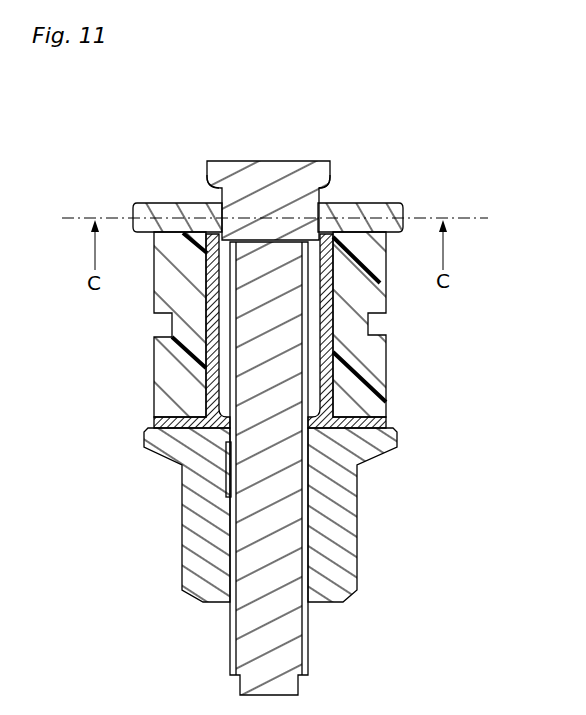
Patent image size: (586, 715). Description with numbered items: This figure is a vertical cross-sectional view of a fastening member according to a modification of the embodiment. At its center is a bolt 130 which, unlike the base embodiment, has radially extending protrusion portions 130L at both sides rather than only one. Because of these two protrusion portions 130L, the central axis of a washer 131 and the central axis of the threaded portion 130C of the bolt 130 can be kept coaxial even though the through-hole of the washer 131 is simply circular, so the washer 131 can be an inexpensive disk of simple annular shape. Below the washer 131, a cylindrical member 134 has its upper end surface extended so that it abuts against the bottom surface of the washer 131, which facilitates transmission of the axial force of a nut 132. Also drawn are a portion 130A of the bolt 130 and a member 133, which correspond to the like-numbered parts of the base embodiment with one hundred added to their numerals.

The bolt 130 is at (283, 380).
The head portion of pin 130A is at (211, 161).
The protrusion portion 130L is at (215, 185).
The threaded portion 130C is at (286, 580).
The washer 131 is at (133, 204).
The nut 132 is at (346, 530).
The elastic member 133 is at (374, 347).
The cylindrical member 134 is at (331, 400).